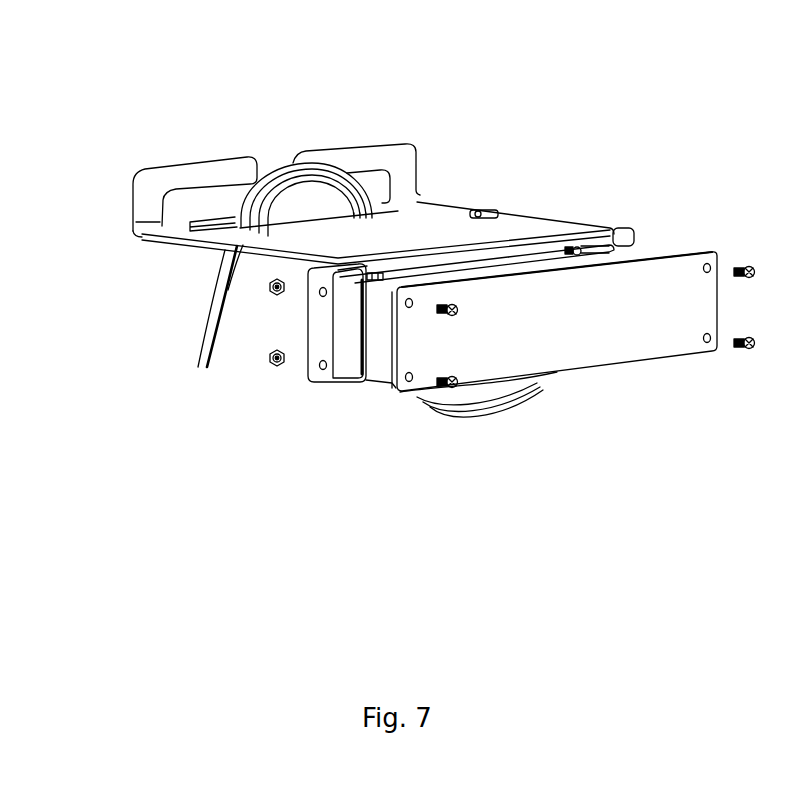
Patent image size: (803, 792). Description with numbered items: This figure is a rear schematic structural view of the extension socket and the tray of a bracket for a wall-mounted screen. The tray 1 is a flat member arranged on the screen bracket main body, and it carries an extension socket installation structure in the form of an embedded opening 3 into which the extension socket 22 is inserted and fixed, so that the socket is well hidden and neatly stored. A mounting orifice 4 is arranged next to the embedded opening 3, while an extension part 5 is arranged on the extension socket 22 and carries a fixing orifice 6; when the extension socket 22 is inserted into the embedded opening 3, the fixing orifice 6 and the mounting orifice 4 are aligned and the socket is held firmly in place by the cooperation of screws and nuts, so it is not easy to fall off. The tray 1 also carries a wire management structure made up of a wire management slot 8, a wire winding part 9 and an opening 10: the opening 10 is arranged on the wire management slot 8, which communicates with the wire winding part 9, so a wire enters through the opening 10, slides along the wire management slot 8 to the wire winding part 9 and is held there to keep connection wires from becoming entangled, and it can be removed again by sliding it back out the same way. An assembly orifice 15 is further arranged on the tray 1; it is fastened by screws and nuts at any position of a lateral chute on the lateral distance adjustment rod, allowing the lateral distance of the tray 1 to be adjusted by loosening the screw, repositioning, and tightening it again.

The tray 1 is at (397, 242).
The embedded opening 3 is at (348, 345).
The mounting orifice 4 is at (320, 297).
The extension part 5 is at (545, 350).
The fixing orifice 6 is at (401, 392).
The wire management slot 8 is at (193, 215).
The wire winding part 9 is at (217, 270).
The opening 10 is at (272, 164).
The assembly orifice 15 is at (480, 214).
The extension socket 22 is at (620, 253).